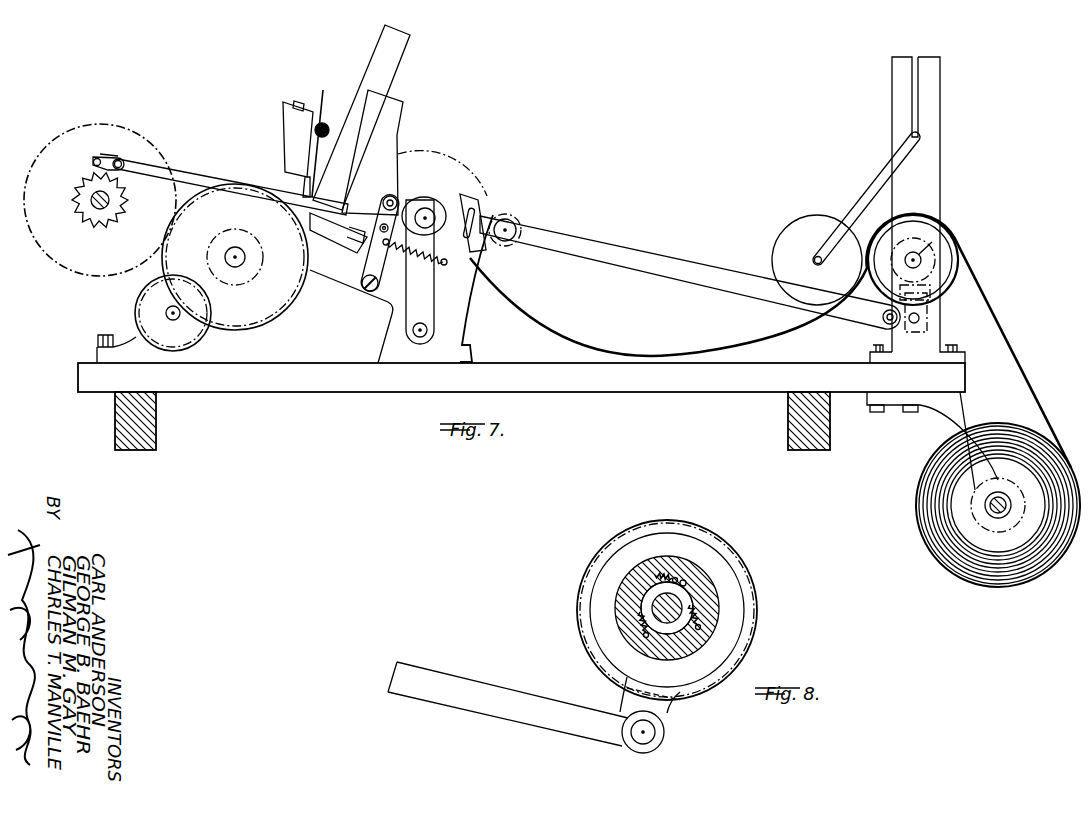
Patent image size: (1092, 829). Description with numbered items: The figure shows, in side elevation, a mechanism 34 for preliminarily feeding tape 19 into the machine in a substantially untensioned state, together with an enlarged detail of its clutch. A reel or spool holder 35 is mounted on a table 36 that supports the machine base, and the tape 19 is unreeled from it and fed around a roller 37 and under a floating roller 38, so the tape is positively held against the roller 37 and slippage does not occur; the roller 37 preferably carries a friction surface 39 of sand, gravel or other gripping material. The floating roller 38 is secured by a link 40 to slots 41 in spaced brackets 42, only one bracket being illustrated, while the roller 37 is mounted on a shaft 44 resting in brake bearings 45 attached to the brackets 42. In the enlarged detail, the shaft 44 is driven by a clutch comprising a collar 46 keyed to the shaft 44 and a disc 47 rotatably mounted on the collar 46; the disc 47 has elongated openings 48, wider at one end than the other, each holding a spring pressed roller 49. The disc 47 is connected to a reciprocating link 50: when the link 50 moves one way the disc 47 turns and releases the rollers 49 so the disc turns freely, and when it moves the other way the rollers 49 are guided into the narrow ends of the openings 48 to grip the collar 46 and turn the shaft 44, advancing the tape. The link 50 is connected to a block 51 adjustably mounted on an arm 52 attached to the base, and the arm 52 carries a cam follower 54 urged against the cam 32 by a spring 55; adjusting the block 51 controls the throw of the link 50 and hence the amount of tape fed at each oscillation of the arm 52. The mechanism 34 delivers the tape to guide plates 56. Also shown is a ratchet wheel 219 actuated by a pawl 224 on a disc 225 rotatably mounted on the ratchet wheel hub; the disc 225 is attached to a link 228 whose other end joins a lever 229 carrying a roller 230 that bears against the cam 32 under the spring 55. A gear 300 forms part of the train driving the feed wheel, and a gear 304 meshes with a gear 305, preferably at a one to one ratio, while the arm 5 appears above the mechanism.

In FIG. 7, the arm 5 is at (383, 49).
In FIG. 7, the tape 19 is at (708, 356).
In FIG. 7, the cam 32 is at (456, 156).
In FIG. 7, the mechanism 34 is at (730, 190).
In FIG. 7, the reel or spool holder 35 is at (942, 430).
In FIG. 7, the table 36 is at (730, 392).
In FIG. 7, the roller 37 is at (962, 283).
In FIG. 8, the roller 37 is at (752, 626).
In FIG. 7, the floating roller 38 is at (800, 225).
In FIG. 7, the friction surface 39 is at (960, 264).
In FIG. 8, the friction surface 39 is at (757, 592).
In FIG. 7, the link 40 is at (858, 205).
In FIG. 7, the slots 41 is at (918, 96).
In FIG. 7, the brackets 42 is at (940, 133).
In FIG. 7, the shaft 44 is at (925, 258).
In FIG. 8, the shaft 44 is at (652, 608).
In FIG. 7, the brake bearings 45 is at (933, 241).
In FIG. 8, the collar 46 is at (688, 596).
In FIG. 7, the disc 47 is at (942, 280).
In FIG. 8, the disc 47 is at (712, 563).
In FIG. 8, the elongated openings 48 is at (672, 568).
In FIG. 8, the spring pressed roller 49 is at (685, 582).
In FIG. 7, the reciprocating link 50 is at (647, 255).
In FIG. 8, the reciprocating link 50 is at (533, 718).
In FIG. 7, the block 51 is at (505, 213).
In FIG. 7, the arm 52 is at (445, 305).
In FIG. 7, the cam follower 54 is at (497, 220).
In FIG. 7, the spring 55 is at (388, 268).
In FIG. 7, the guide plates 56 is at (479, 262).
In FIG. 7, the ratchet wheel 219 is at (83, 222).
In FIG. 7, the pawl 224 is at (90, 166).
In FIG. 7, the disc 225 is at (120, 158).
In FIG. 7, the link 228 is at (232, 183).
In FIG. 7, the lever 229 is at (370, 265).
In FIG. 7, the roller 230 is at (387, 198).
In FIG. 7, the gear 300 is at (196, 340).
In FIG. 7, the gear 304 is at (258, 320).
In FIG. 7, the gear 305 is at (63, 276).